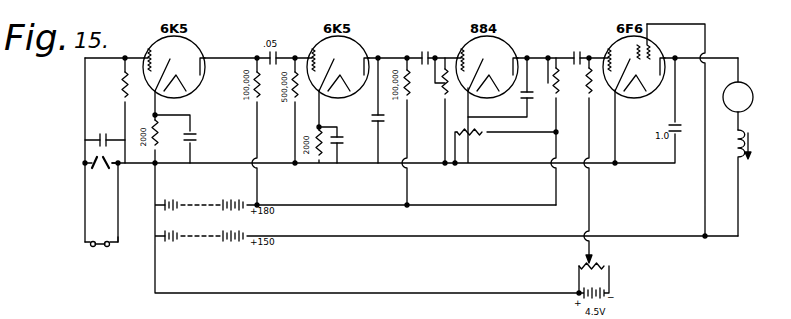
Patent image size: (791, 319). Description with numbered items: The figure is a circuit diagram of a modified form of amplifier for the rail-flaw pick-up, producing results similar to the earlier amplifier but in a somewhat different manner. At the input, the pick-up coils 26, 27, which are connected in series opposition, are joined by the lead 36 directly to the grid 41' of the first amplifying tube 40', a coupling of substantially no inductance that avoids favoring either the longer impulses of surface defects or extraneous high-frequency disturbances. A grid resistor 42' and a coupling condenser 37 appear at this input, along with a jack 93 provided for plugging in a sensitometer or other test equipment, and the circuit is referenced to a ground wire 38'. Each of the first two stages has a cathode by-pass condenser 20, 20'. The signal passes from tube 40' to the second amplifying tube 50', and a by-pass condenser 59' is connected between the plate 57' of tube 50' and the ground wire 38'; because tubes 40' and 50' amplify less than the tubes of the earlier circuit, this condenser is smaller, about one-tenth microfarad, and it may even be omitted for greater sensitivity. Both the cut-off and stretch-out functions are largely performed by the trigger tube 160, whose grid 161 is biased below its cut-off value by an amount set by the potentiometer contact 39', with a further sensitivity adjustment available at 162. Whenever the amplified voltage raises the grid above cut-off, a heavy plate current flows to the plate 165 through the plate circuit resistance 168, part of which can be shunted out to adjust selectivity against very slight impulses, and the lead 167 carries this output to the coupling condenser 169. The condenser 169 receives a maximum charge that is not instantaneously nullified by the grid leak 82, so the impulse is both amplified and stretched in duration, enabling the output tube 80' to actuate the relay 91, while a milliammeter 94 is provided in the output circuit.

The grid 41' is at (161, 59).
The tube 40' is at (234, 36).
The grid resistor 42' is at (114, 110).
The coupling condenser 37 is at (97, 145).
The lead 36 is at (84, 131).
The jack 93 is at (97, 171).
The ground wire 38' is at (130, 202).
The coil 26 is at (90, 247).
The coil 27 is at (107, 247).
The cathode by-pass condenser 20 is at (188, 139).
The tube 50' is at (329, 52).
The plate 57' is at (391, 38).
The by-pass condenser 59' is at (364, 110).
The cathode by-pass condenser 20' is at (343, 145).
The sensitivity adjustment 162 is at (444, 90).
The grid 161 is at (463, 48).
The trigger tube 160 is at (508, 44).
The plate 165 is at (505, 62).
The potentiometer contact 39' is at (484, 144).
The junction lead 167 is at (548, 56).
The coupling condenser 169 is at (582, 54).
The plate circuit resistance 168 is at (559, 97).
The grid leak 82 is at (592, 92).
The tube 80' is at (625, 52).
The milliammeter 94 is at (741, 80).
The relay 91 is at (735, 161).